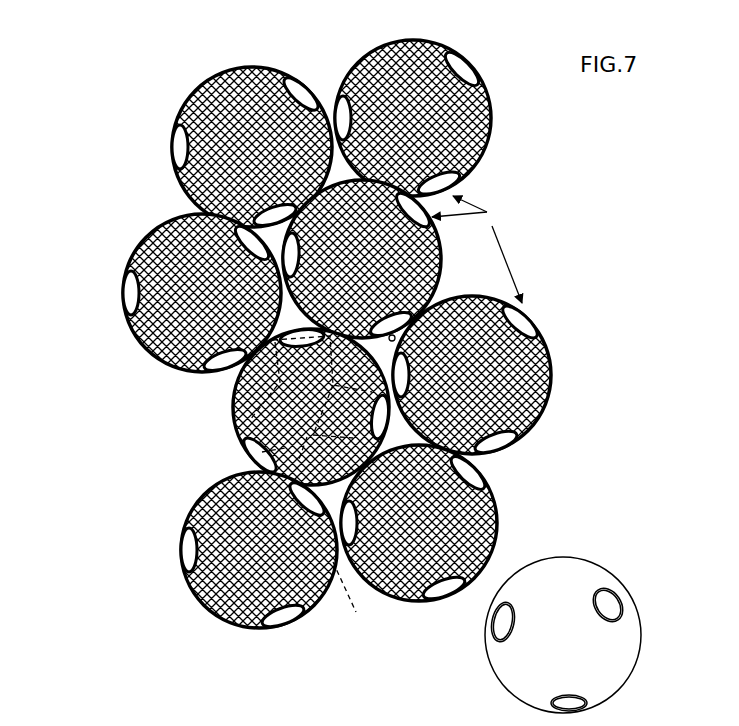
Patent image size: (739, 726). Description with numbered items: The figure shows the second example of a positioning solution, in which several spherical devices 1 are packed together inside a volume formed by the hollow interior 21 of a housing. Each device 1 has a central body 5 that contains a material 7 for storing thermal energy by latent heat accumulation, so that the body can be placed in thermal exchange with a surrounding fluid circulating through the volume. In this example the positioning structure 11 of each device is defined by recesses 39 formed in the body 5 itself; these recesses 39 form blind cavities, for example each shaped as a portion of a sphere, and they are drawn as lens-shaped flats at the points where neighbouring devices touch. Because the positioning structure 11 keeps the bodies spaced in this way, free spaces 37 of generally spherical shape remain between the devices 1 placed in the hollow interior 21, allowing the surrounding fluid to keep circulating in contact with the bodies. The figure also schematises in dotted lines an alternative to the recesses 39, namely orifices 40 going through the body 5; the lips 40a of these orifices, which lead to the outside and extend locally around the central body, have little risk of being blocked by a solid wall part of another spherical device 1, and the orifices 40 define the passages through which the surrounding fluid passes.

The device 1 is at (364, 365).
The central body 5 is at (138, 238).
The material for storing thermal energy 7 is at (364, 358).
The positioning structure 11 is at (477, 249).
The hollow interior 21 is at (155, 433).
The free spaces 37 is at (394, 336).
The recesses 39 is at (182, 138).
The orifices 40 is at (247, 378).
The lips 40a is at (253, 450).